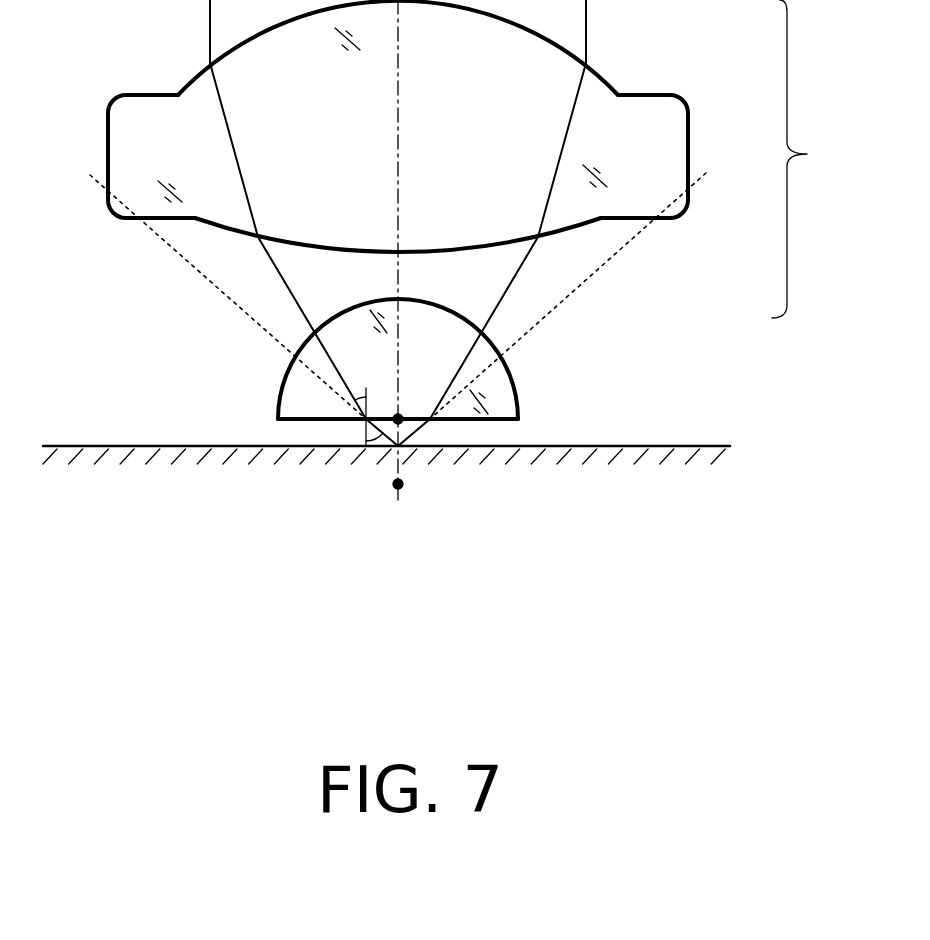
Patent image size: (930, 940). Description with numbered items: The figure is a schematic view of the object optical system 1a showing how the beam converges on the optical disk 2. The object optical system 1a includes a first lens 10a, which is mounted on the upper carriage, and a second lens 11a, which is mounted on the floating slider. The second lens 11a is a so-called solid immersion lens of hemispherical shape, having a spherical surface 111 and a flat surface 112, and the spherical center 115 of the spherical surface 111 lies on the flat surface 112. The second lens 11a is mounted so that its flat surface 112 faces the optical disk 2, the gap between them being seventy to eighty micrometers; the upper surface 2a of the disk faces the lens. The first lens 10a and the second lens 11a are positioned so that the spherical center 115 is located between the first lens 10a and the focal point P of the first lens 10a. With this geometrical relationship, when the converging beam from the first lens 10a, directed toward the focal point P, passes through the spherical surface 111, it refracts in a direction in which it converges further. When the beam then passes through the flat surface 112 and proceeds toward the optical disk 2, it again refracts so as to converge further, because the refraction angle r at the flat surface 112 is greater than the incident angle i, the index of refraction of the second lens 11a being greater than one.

The object optical system 1a is at (484, 257).
The first lens 10a is at (600, 103).
The second lens 11a is at (420, 385).
The spherical surface 111 is at (343, 318).
The flat surface 112 is at (298, 423).
The spherical center 115 is at (400, 418).
The optical disk 2 is at (390, 411).
The surface of recording medium 2a is at (673, 446).
The focal point P is at (428, 486).
The incident angle i is at (358, 392).
The refraction angle r is at (382, 447).